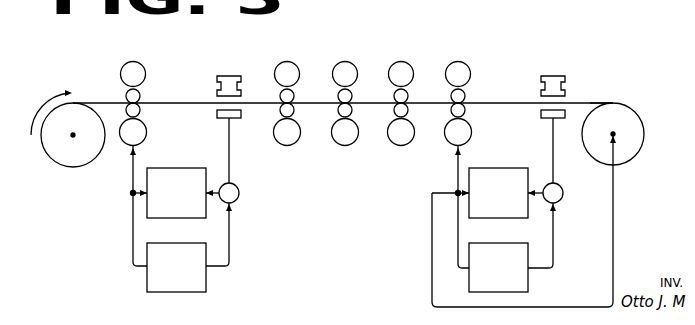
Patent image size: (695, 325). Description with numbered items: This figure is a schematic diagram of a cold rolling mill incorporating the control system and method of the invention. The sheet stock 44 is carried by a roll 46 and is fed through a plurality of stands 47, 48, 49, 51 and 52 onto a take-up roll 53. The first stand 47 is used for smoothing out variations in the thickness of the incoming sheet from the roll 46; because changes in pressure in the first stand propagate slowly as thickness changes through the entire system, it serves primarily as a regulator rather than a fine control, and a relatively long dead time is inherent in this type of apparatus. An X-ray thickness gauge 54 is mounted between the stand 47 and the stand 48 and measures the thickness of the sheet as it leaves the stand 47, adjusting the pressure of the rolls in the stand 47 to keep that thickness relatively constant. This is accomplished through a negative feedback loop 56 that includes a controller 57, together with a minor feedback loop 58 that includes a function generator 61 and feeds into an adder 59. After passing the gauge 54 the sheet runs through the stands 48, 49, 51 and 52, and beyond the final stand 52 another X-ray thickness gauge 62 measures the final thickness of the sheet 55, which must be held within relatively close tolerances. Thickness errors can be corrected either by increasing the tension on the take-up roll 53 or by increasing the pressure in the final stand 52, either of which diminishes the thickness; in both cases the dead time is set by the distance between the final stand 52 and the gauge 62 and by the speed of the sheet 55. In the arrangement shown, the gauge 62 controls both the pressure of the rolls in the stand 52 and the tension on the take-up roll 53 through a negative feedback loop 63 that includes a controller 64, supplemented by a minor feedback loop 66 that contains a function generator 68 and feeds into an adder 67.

The sheet stock 44 is at (105, 101).
The roll 46 is at (63, 163).
The first stand 47 is at (140, 66).
The stand 48 is at (293, 67).
The stand 49 is at (351, 67).
The stand 51 is at (407, 67).
The final stand 52 is at (465, 67).
The take-up roll 53 is at (640, 143).
The X-ray thickness gauge 54 is at (228, 76).
The sheet 55 is at (587, 102).
The negative feedback loop 56 is at (231, 166).
The controller 57 is at (193, 163).
The minor feedback loop 58 is at (130, 238).
The adder 59 is at (239, 197).
The function generator 61 is at (180, 293).
The X-ray thickness gauge 62 is at (557, 76).
The negative feedback loop 63 is at (555, 168).
The controller 64 is at (501, 168).
The minor feedback loop 66 is at (555, 238).
The adder 67 is at (563, 197).
The function generator 68 is at (528, 285).